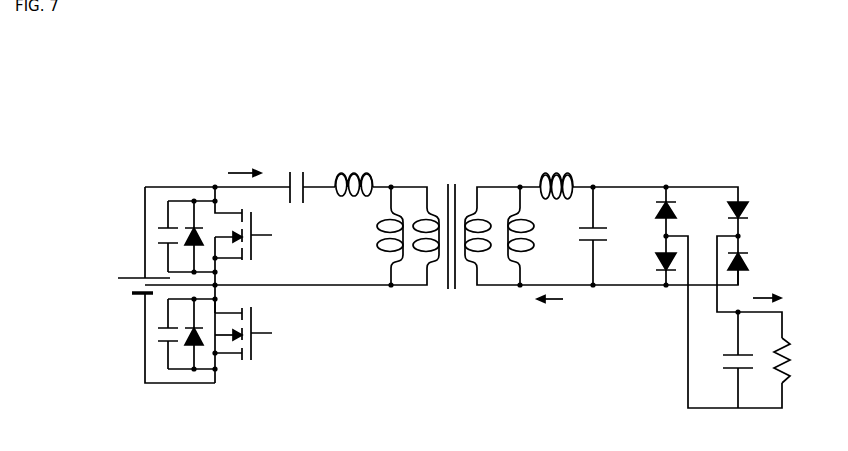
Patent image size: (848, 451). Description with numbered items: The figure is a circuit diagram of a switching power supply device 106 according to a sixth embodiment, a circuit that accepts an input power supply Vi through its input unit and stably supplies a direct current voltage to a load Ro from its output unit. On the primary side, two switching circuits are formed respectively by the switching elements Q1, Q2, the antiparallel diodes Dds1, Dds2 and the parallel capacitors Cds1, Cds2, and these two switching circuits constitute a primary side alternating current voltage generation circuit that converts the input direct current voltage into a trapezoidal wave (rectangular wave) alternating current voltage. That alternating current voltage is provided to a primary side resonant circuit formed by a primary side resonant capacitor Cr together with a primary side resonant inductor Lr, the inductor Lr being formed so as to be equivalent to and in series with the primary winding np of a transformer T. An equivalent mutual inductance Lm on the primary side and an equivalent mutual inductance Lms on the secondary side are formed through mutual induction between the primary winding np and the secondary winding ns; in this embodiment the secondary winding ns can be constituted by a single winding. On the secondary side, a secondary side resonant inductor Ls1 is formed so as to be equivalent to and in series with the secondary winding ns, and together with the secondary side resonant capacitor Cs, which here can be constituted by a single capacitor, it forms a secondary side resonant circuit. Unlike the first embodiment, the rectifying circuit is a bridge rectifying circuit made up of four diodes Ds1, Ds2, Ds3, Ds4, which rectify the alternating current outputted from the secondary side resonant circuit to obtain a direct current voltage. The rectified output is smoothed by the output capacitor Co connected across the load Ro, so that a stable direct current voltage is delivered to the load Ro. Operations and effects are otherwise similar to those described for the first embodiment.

The switching power supply device 106 is at (810, 140).
The input power supply Vi is at (160, 285).
The switching element Q1 is at (257, 333).
The switching element Q2 is at (266, 234).
The parallel capacitor Cds1 is at (160, 354).
The parallel capacitor Cds2 is at (160, 214).
The antiparallel diode Dds1 is at (200, 354).
The antiparallel diode Dds2 is at (200, 214).
The primary side resonant capacitor Cr is at (294, 174).
The primary side resonant inductor Lr is at (354, 170).
The equivalent mutual inductance Lm is at (374, 236).
The transformer T is at (452, 223).
The primary winding np is at (421, 213).
The secondary winding ns is at (483, 213).
The secondary side resonant inductor Ls1 is at (556, 171).
The equivalent mutual inductance Lms is at (537, 236).
The secondary side resonant capacitor Cs is at (597, 236).
The rectifying diode Ds1 is at (753, 218).
The rectifying diode Ds2 is at (753, 260).
The rectifying diode Ds3 is at (649, 260).
The rectifying diode Ds4 is at (649, 211).
The output capacitor Co is at (729, 360).
The load Ro is at (769, 354).